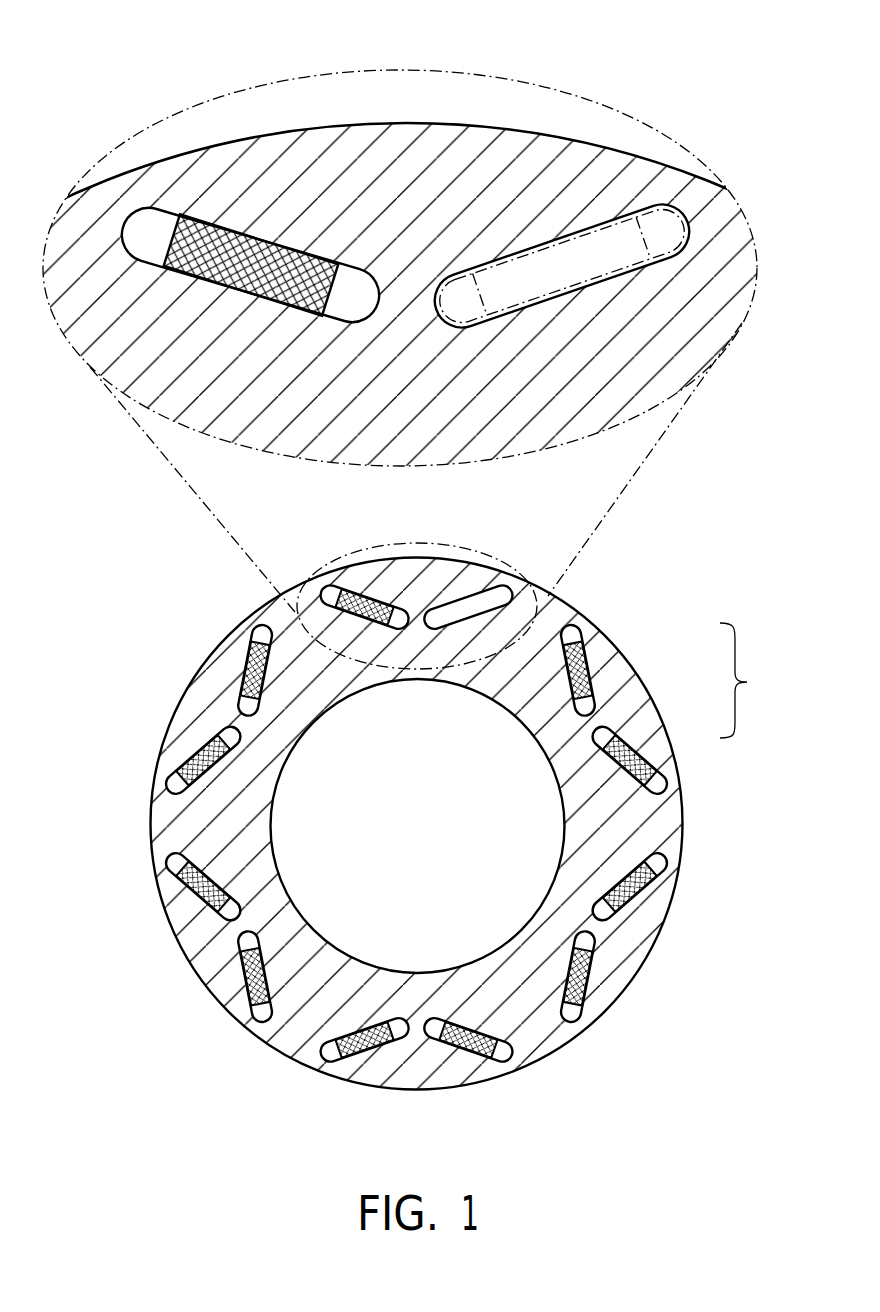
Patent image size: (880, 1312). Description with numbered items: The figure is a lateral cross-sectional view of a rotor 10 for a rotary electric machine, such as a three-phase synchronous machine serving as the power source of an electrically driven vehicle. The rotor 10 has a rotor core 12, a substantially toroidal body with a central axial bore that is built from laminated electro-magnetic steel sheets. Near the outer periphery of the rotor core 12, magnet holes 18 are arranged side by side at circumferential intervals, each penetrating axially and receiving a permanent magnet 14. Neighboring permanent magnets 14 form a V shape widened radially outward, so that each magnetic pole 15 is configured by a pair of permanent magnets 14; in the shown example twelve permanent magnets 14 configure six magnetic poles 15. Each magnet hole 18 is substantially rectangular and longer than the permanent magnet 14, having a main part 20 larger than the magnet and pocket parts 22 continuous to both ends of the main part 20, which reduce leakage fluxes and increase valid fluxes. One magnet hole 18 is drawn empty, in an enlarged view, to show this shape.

The rotor 10 is at (171, 1017).
The rotor core 12 is at (665, 830).
The permanent magnet 14 is at (597, 640).
The magnetic pole 15 is at (750, 680).
The magnet hole 18 is at (487, 590).
The main part 20 is at (543, 240).
The pocket part 22 is at (450, 268).